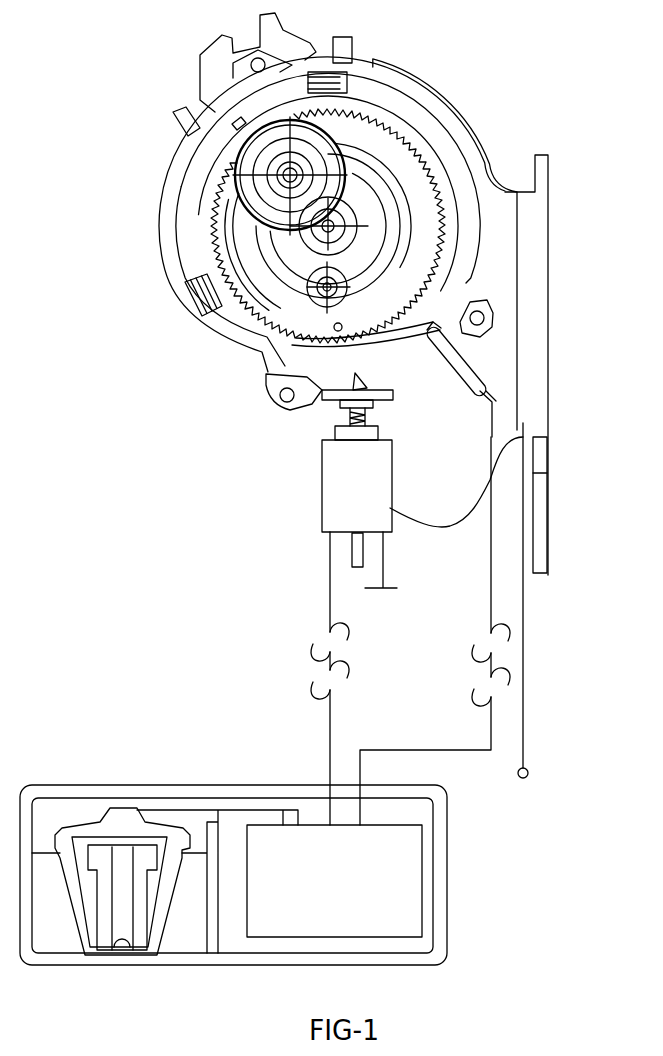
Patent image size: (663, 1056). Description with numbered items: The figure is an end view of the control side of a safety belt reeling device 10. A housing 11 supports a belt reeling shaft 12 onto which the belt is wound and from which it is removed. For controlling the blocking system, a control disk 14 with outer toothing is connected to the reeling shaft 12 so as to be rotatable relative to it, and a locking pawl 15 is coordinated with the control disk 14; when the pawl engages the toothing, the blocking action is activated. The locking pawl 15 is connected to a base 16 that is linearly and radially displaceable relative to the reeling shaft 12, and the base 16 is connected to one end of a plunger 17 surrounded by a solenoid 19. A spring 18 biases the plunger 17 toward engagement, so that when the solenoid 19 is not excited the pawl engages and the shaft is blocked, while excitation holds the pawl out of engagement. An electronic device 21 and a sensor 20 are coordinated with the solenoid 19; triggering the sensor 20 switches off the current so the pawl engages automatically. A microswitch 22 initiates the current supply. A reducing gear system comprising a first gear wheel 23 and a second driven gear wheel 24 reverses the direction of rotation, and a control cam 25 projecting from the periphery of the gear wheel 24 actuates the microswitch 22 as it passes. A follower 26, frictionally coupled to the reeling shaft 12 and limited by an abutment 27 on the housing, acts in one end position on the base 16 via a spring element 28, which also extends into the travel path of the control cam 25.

The safety belt reeling device 10 is at (490, 118).
The housing 11 is at (537, 315).
The belt reeling shaft 12 is at (334, 222).
The control disk 14 is at (385, 351).
The locking pawl 15 is at (395, 394).
The base 16 is at (350, 412).
The plunger 17 is at (352, 557).
The spring 18 is at (340, 428).
The solenoid 19 is at (338, 513).
The sensor 20 is at (180, 947).
The electronic device 21 is at (403, 883).
The microswitch 22 is at (484, 380).
The first gear wheel 23 is at (292, 172).
The second driven gear wheel 24 is at (220, 268).
The control cam 25 is at (330, 344).
The follower 26 is at (300, 350).
The abutment 27 is at (342, 326).
The spring element 28 is at (275, 396).